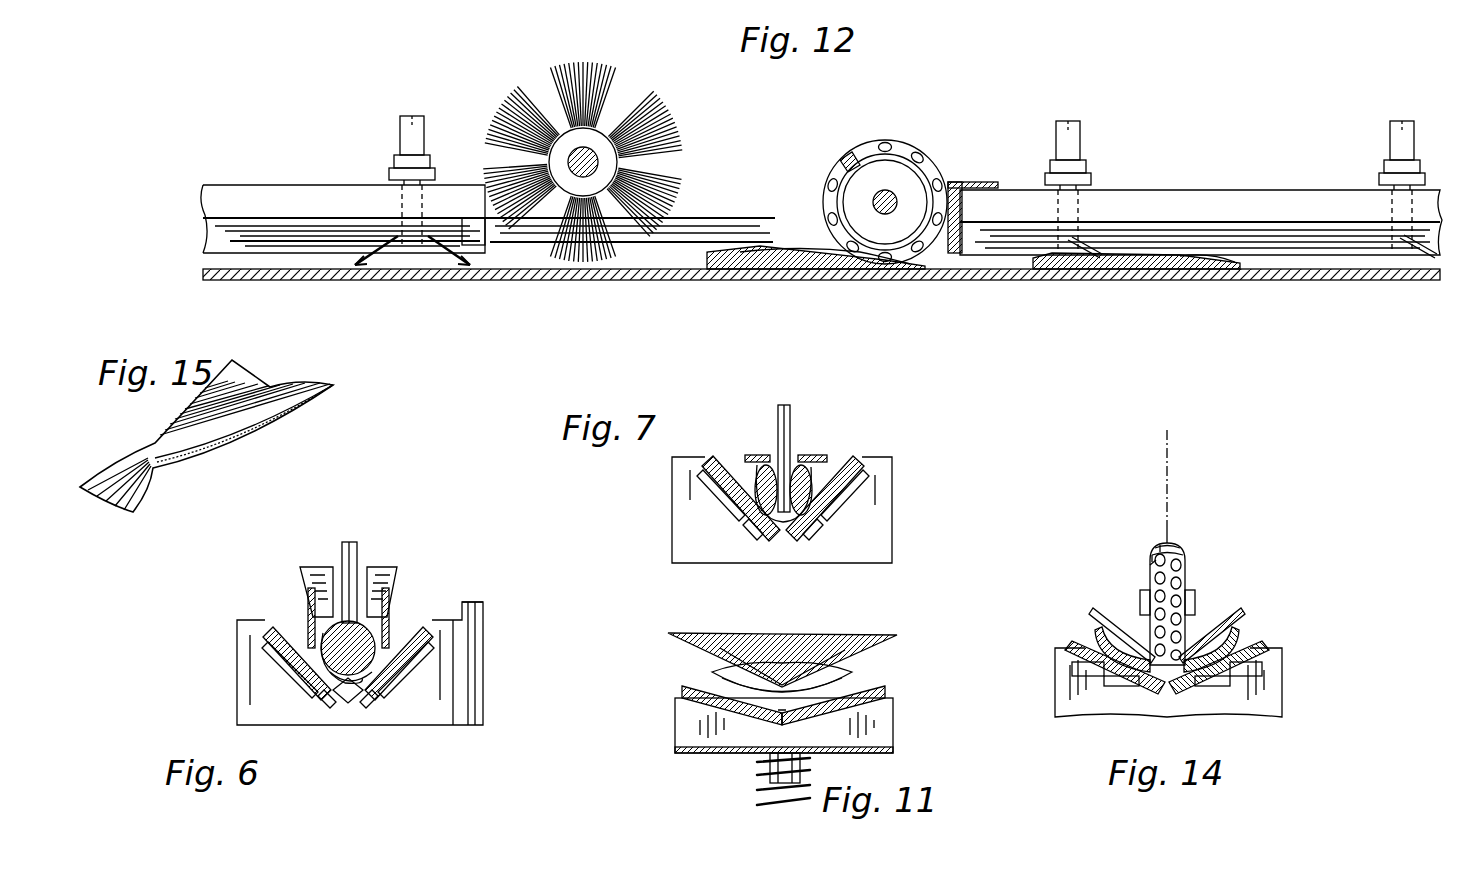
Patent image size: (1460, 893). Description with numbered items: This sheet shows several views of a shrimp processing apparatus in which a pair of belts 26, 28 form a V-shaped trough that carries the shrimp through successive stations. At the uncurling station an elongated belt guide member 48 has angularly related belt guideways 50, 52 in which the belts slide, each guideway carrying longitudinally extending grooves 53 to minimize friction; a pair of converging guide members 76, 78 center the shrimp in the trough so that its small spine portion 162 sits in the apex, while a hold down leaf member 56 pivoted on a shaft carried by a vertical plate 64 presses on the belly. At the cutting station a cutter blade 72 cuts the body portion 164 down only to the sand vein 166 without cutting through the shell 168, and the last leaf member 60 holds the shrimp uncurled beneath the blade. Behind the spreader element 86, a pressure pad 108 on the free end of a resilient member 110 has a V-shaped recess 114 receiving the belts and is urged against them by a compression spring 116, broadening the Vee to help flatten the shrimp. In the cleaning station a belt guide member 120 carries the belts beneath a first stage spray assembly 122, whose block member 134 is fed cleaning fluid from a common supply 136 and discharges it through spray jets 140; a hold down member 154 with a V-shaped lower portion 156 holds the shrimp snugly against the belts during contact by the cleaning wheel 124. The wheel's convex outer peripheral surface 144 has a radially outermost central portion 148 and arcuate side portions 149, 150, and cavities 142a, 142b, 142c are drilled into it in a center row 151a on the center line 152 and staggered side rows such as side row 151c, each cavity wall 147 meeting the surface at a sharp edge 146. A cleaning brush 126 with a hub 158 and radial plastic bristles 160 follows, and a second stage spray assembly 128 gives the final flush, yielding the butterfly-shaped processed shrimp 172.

In FIG. 6, the belt 26 is at (268, 630).
In FIG. 7, the belt 26 is at (718, 443).
In FIG. 11, the belt 26 is at (684, 688).
In FIG. 14, the belt 26 is at (1250, 650).
In FIG. 12, the belt 28 is at (520, 258).
In FIG. 6, the belt 28 is at (432, 630).
In FIG. 7, the belt 28 is at (862, 460).
In FIG. 11, the belt 28 is at (880, 692).
In FIG. 14, the belt 28 is at (1080, 652).
In FIG. 6, the belt guide member 48 is at (435, 710).
In FIG. 7, the belt guide member 48 is at (685, 508).
In FIG. 6, the belt guideway 50 is at (262, 645).
In FIG. 6, the belt guideway 52 is at (436, 645).
In FIG. 6, the grooves 53 is at (318, 693).
In FIG. 6, the hold down leaf member 56 is at (376, 570).
In FIG. 7, the hold down leaf member 60 is at (760, 455).
In FIG. 6, the plate 64 is at (476, 620).
In FIG. 6, the cutter blade 72 is at (348, 542).
In FIG. 7, the cutter blade 72 is at (792, 410).
In FIG. 6, the guide member 76 is at (308, 592).
In FIG. 6, the guide member 78 is at (389, 605).
In FIG. 11, the spreader element 86 is at (715, 628).
In FIG. 11, the pressure pad 108 is at (680, 708).
In FIG. 11, the resilient member 110 is at (690, 752).
In FIG. 11, the V-shaped recess 114 is at (870, 702).
In FIG. 11, the compression spring 116 is at (768, 762).
In FIG. 14, the belt guide member 120 is at (1265, 680).
In FIG. 12, the first stage spray assembly 122 is at (1290, 195).
In FIG. 12, the cleaning wheel 124 is at (898, 146).
In FIG. 12, the cleaning brush 126 is at (663, 70).
In FIG. 12, the second stage spray assembly 128 is at (203, 184).
In FIG. 12, the block member 134 is at (213, 210).
In FIG. 12, the common supply 136 is at (405, 195).
In FIG. 12, the spray jet 140 is at (428, 252).
In FIG. 12, the cavities 142a is at (830, 182).
In FIG. 14, the cavities 142a is at (1182, 575).
In FIG. 14, the cavities 142b is at (1182, 605).
In FIG. 14, the cavities 142c is at (1142, 598).
In FIG. 12, the outer peripheral surface 144 is at (855, 138).
In FIG. 14, the outer peripheral surface 144 is at (1190, 552).
In FIG. 12, the sharp edge 146 is at (845, 165).
In FIG. 14, the cavity wall 147 is at (1170, 545).
In FIG. 14, the central portion 148 is at (1178, 548).
In FIG. 14, the arcuate side portion 149 is at (1152, 560).
In FIG. 14, the arcuate side portion 150 is at (1183, 553).
In FIG. 14, the center row 151a is at (1160, 520).
In FIG. 14, the side row 151c is at (1155, 548).
In FIG. 14, the center line 152 is at (1170, 455).
In FIG. 12, the hold down member 154 is at (966, 186).
In FIG. 12, the V-shaped lower portion 156 is at (962, 226).
In FIG. 14, the V-shaped lower portion 156 is at (1243, 610).
In FIG. 12, the hub 158 is at (598, 163).
In FIG. 12, the plastic bristles 160 is at (515, 98).
In FIG. 6, the spine portion 162 is at (330, 702).
In FIG. 7, the spine portion 162 is at (805, 530).
In FIG. 6, the body portion 164 is at (370, 635).
In FIG. 7, the body portion 164 is at (758, 458).
In FIG. 6, the sand vein 166 is at (375, 668).
In FIG. 7, the sand vein 166 is at (760, 530).
In FIG. 11, the sand vein 166 is at (790, 660).
In FIG. 15, the shell 168 is at (318, 402).
In FIG. 6, the shell 168 is at (325, 640).
In FIG. 7, the shell 168 is at (808, 470).
In FIG. 11, the shell 168 is at (855, 680).
In FIG. 14, the shell 168 is at (1097, 640).
In FIG. 15, the processed shrimp 172 is at (305, 372).